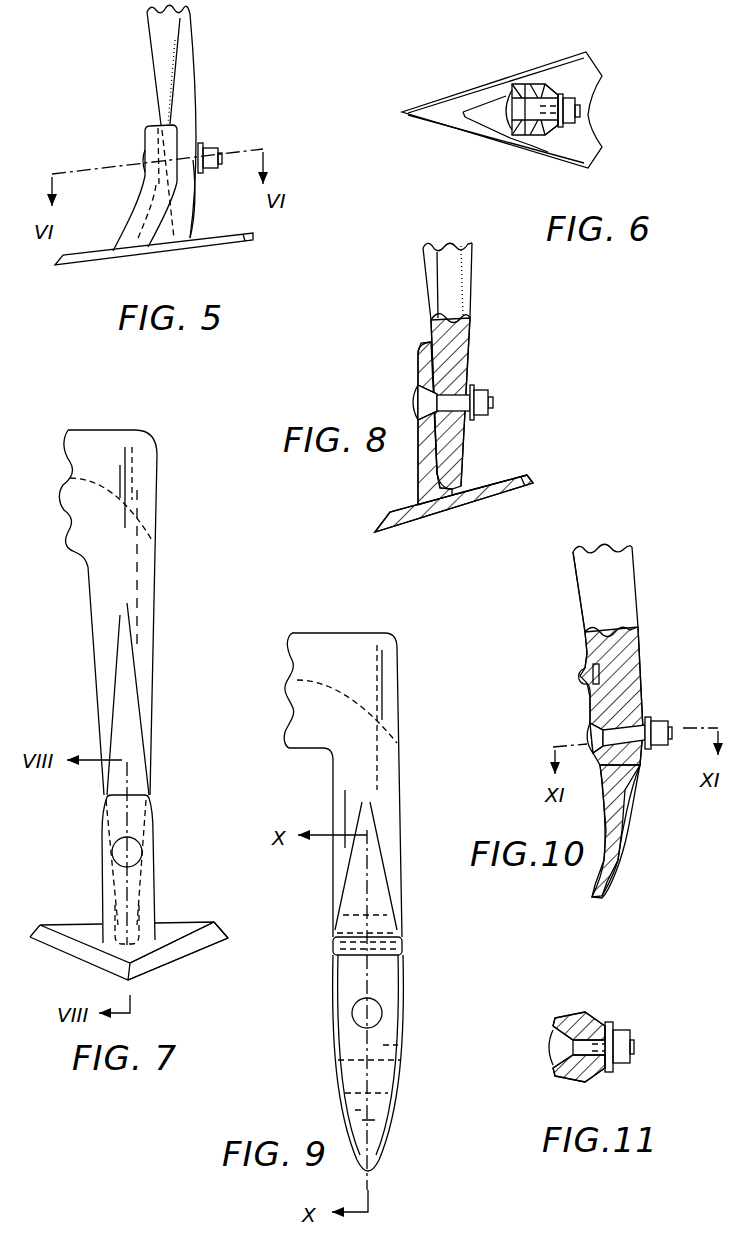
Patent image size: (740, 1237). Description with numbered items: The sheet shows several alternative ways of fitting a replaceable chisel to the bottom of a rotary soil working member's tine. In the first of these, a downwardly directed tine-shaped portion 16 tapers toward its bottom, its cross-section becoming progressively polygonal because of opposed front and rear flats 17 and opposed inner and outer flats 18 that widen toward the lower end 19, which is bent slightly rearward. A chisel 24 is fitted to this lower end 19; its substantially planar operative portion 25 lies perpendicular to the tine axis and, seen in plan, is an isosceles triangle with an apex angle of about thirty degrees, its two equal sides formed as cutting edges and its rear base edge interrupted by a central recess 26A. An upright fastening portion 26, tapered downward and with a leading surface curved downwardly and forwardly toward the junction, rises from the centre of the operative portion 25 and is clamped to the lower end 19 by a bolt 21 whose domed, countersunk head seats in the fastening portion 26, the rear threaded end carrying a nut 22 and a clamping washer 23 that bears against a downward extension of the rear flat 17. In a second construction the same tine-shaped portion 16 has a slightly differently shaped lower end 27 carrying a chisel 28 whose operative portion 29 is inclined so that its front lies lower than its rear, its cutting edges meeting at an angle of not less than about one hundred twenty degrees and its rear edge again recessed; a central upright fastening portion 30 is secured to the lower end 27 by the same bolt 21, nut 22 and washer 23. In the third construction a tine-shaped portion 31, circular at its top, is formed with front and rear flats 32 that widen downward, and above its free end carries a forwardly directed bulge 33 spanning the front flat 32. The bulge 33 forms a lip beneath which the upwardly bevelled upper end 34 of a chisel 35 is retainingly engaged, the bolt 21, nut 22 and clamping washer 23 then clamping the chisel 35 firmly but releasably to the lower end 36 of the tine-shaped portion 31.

In FIG. 5, the tine-shaped portion 16 is at (200, 48).
In FIG. 8, the tine-shaped portion 16 is at (423, 268).
In FIG. 7, the tine-shaped portion 16 is at (158, 612).
In FIG. 7, the front and rear flats 17 is at (123, 707).
In FIG. 5, the inner and outer flats 18 is at (168, 63).
In FIG. 5, the lower end 19 is at (196, 204).
In FIG. 6, the lower end 19 is at (543, 146).
In FIG. 5, the bolt 21 is at (222, 158).
In FIG. 6, the bolt 21 is at (588, 109).
In FIG. 8, the bolt 21 is at (523, 397).
In FIG. 7, the bolt 21 is at (122, 850).
In FIG. 9, the bolt 21 is at (375, 1015).
In FIG. 10, the bolt 21 is at (672, 736).
In FIG. 11, the bolt 21 is at (553, 1046).
In FIG. 5, the nut 22 is at (215, 148).
In FIG. 8, the nut 22 is at (480, 393).
In FIG. 10, the nut 22 is at (668, 727).
In FIG. 11, the nut 22 is at (630, 1062).
In FIG. 5, the clamping washer 23 is at (201, 142).
In FIG. 8, the clamping washer 23 is at (472, 387).
In FIG. 10, the clamping washer 23 is at (648, 719).
In FIG. 11, the clamping washer 23 is at (613, 1028).
In FIG. 5, the chisel 24 is at (137, 212).
In FIG. 6, the chisel 24 is at (450, 95).
In FIG. 5, the operative portion 25 is at (202, 248).
In FIG. 6, the operative portion 25 is at (440, 117).
In FIG. 5, the fastening portion 26 is at (146, 132).
In FIG. 6, the fastening portion 26 is at (516, 84).
In FIG. 6, the recess 26A is at (584, 103).
In FIG. 8, the lower end 27 is at (458, 454).
In FIG. 7, the lower end 27 is at (113, 887).
In FIG. 8, the chisel 28 is at (383, 517).
In FIG. 7, the chisel 28 is at (157, 899).
In FIG. 8, the operative portion 29 is at (480, 497).
In FIG. 7, the operative portion 29 is at (110, 963).
In FIG. 8, the fastening portion 30 is at (417, 363).
In FIG. 7, the fastening portion 30 is at (127, 903).
In FIG. 9, the tine-shaped portion 31 is at (401, 764).
In FIG. 10, the tine-shaped portion 31 is at (647, 605).
In FIG. 9, the front and rear flats 32 is at (360, 868).
In FIG. 10, the front and rear flats 32 is at (580, 607).
In FIG. 9, the bulge 33 is at (343, 942).
In FIG. 10, the bulge 33 is at (581, 674).
In FIG. 9, the upper end 34 is at (342, 1003).
In FIG. 10, the upper end 34 is at (590, 682).
In FIG. 10, the chisel 35 is at (590, 707).
In FIG. 11, the chisel 35 is at (554, 1022).
In FIG. 9, the lower end 36 is at (405, 1047).
In FIG. 10, the lower end 36 is at (645, 763).
In FIG. 11, the lower end 36 is at (595, 1016).